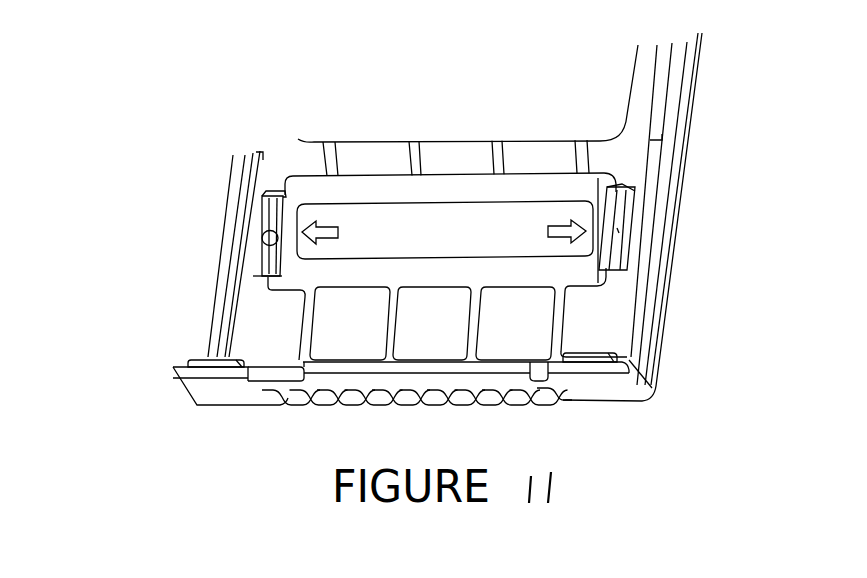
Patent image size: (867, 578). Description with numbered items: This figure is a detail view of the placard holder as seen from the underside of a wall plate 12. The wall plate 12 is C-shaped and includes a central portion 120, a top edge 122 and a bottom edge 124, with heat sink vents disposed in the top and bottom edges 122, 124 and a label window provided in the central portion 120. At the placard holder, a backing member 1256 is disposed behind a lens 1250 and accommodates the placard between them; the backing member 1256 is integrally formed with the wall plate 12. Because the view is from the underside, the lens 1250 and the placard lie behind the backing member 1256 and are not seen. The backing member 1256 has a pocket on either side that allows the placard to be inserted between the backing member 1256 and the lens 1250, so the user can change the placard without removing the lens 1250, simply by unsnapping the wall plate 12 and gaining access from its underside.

The wall plate 12 is at (686, 83).
The central portion 120 is at (532, 403).
The top edge 122 is at (483, 84).
The bottom edge 124 is at (161, 85).
The lens 1250 is at (262, 257).
The backing member 1256 is at (266, 279).